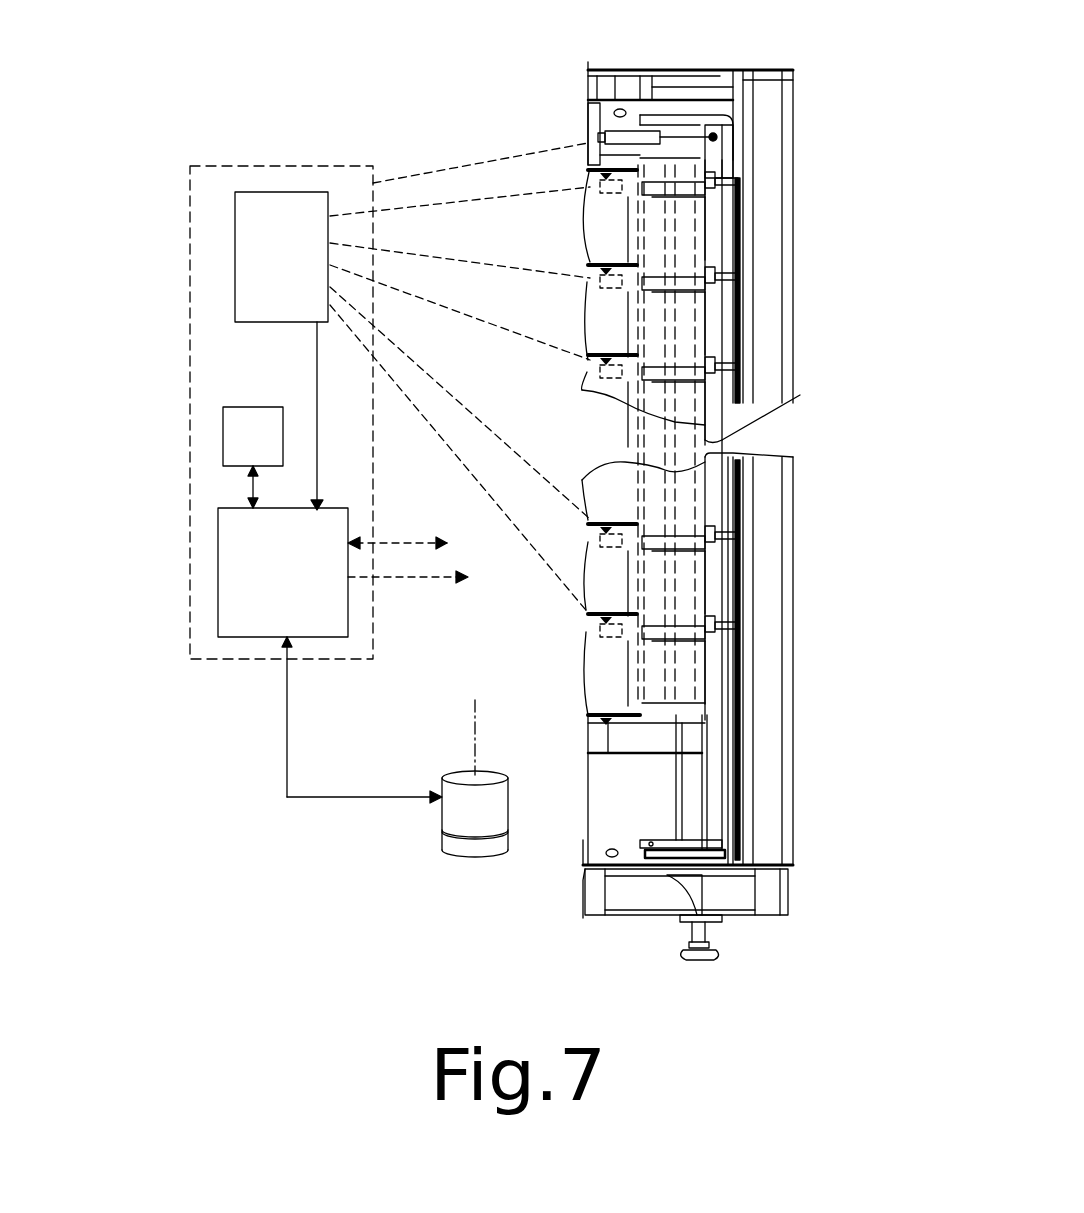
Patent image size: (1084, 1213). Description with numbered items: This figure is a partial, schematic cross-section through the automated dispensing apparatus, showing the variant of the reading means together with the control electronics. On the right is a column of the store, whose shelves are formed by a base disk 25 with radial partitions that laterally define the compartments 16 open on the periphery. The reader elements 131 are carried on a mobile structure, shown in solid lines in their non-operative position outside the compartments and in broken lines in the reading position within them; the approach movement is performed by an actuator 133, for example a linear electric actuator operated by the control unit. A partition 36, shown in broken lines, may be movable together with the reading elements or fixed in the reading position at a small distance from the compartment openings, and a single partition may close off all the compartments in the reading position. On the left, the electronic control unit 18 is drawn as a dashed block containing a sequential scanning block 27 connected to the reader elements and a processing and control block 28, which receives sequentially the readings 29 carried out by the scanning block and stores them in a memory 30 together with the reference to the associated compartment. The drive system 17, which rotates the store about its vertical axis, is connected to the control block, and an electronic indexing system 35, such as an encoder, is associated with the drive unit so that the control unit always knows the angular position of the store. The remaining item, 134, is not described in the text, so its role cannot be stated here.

The compartments 16 is at (606, 600).
The drive system 17 is at (445, 790).
The electronic control unit 18 is at (287, 166).
The base disk 25 is at (588, 262).
The sequential scanning block 27 is at (243, 268).
The processing and control block 28 is at (230, 548).
The readings 29 is at (317, 363).
The memory 30 is at (235, 425).
The electronic indexing system 35 is at (445, 848).
The partition 36 is at (642, 232).
The reader elements 131 is at (708, 157).
The actuator 133 is at (636, 130).
The guide rail 134 is at (720, 432).